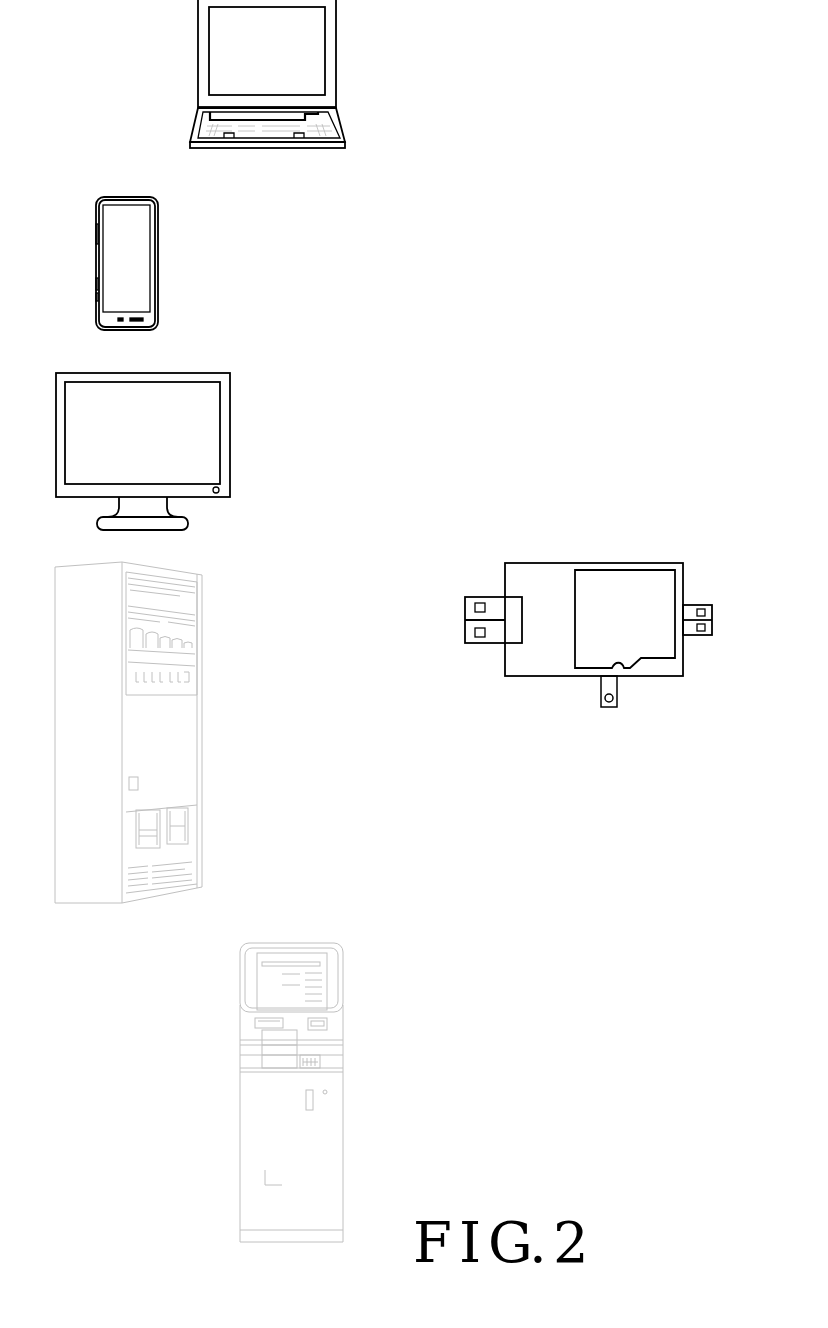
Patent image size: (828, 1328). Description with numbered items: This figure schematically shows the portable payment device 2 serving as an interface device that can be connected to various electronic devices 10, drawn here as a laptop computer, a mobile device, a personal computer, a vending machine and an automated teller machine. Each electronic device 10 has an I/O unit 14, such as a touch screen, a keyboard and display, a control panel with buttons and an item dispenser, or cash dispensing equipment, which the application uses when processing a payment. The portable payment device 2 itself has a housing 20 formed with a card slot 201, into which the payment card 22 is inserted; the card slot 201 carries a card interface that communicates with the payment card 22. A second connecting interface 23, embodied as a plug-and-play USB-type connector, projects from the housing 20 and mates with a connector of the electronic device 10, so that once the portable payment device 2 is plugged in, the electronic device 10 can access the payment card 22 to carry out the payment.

The portable payment device 2 is at (566, 657).
The electronic device 10 is at (190, 135).
The I/O unit 14 is at (300, 125).
The housing 20 is at (551, 640).
The card slot 201 is at (574, 604).
The payment card 22 is at (627, 600).
The second connecting interface 23 is at (470, 620).